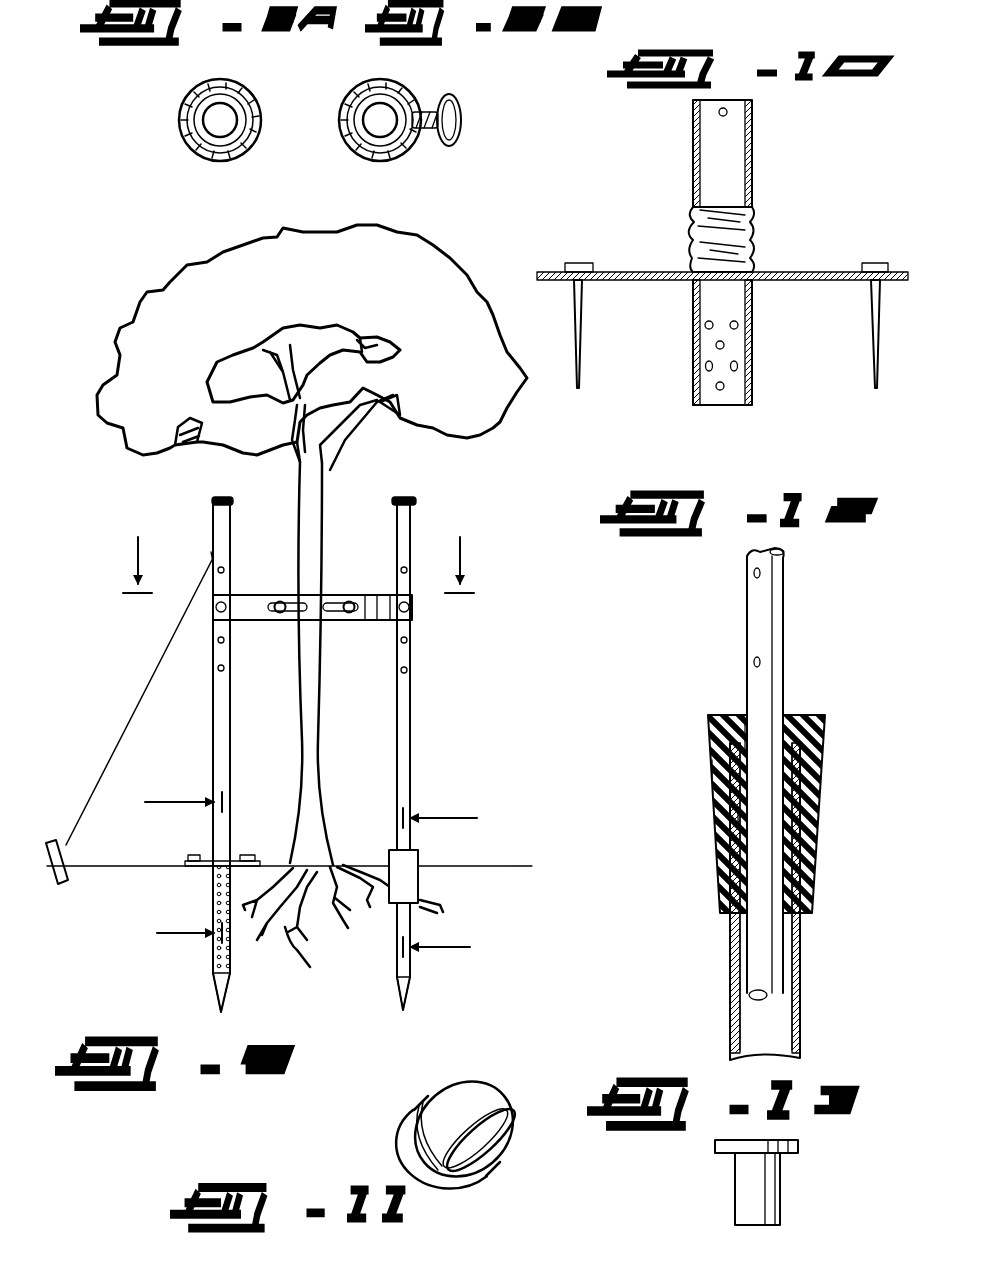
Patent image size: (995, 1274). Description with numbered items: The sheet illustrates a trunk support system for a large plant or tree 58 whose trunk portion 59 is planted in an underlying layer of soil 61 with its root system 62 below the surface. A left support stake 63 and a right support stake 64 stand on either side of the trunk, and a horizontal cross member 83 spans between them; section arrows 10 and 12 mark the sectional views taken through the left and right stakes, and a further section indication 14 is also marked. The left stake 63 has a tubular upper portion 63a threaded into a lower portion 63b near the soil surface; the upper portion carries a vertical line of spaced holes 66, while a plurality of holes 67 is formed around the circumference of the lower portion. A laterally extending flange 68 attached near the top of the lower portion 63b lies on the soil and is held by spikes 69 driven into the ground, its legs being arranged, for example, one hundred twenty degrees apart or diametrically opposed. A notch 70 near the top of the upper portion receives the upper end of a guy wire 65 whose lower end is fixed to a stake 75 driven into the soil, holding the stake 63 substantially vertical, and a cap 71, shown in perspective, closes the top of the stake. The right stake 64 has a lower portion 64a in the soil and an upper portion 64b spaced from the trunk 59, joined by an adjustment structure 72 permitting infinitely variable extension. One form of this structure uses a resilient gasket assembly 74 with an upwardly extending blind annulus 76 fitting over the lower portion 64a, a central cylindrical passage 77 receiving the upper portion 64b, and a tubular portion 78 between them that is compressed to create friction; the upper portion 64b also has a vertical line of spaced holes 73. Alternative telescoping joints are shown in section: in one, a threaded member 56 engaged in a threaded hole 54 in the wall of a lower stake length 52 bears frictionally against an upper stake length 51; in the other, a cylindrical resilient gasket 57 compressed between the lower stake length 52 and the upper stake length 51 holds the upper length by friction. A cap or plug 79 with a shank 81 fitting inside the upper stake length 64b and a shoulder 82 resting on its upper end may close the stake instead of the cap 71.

In FIG. 9, the section line 10 is at (176, 872).
In FIG. 9, the section line 12 is at (451, 886).
In FIG. 9, the section line of FIG. 14 is at (305, 565).
In FIG. 8A, the upper stake length 51 is at (187, 117).
In FIG. 8B, the upper stake length 51 is at (398, 93).
In FIG. 8A, the lower stake length 52 is at (186, 92).
In FIG. 8B, the lower stake length 52 is at (385, 160).
In FIG. 8B, the threaded hole 54 is at (432, 112).
In FIG. 8B, the threaded member 56 is at (455, 100).
In FIG. 8A, the cylindrical resilient gasket 57 is at (188, 150).
In FIG. 9, the tree 58 is at (128, 296).
In FIG. 9, the trunk portion 59 is at (322, 577).
In FIG. 10, the soil layer 61 is at (545, 270).
In FIG. 9, the soil layer 61 is at (505, 866).
In FIG. 9, the root system 62 is at (290, 930).
In FIG. 9, the left support stake 63 is at (211, 742).
In FIG. 10, the upper stake portion 63a is at (754, 122).
In FIG. 9, the upper stake portion 63a is at (252, 767).
In FIG. 10, the lower stake portion 63b is at (702, 378).
In FIG. 9, the lower stake portion 63b is at (210, 895).
In FIG. 9, the right support stake 64 is at (412, 712).
In FIG. 12, the lower stake portion 64a is at (783, 1022).
In FIG. 9, the lower stake portion 64a is at (412, 990).
In FIG. 12, the upper stake portion 64b is at (785, 602).
In FIG. 9, the upper stake portion 64b is at (412, 748).
In FIG. 9, the guy wire 65 is at (130, 725).
In FIG. 10, the spaced holes 66 is at (720, 114).
In FIG. 9, the spaced holes 66 is at (224, 640).
In FIG. 10, the holes 67 is at (724, 348).
In FIG. 9, the holes 67 is at (224, 965).
In FIG. 10, the flange 68 is at (806, 272).
In FIG. 9, the flange 68 is at (262, 862).
In FIG. 10, the spikes 69 is at (870, 318).
In FIG. 9, the spikes 69 is at (190, 858).
In FIG. 9, the notch 70 is at (210, 556).
In FIG. 9, the cap 71 is at (226, 498).
In FIG. 11, the cap 71 is at (475, 1160).
In FIG. 9, the adjustment structure 72 is at (418, 850).
In FIG. 12, the spaced holes 73 is at (750, 662).
In FIG. 9, the spaced holes 73 is at (408, 670).
In FIG. 12, the resilient gasket assembly 74 is at (815, 713).
In FIG. 9, the stake 75 is at (55, 838).
In FIG. 12, the blind annulus 76 is at (712, 770).
In FIG. 12, the cylindrical passage 77 is at (745, 745).
In FIG. 12, the tubular portion 78 is at (740, 818).
In FIG. 9, the cap or plug 79 is at (412, 498).
In FIG. 13, the cap or plug 79 is at (798, 1143).
In FIG. 13, the shank 81 is at (735, 1200).
In FIG. 13, the shoulder 82 is at (722, 1155).
In FIG. 9, the crossbar 83 is at (414, 616).